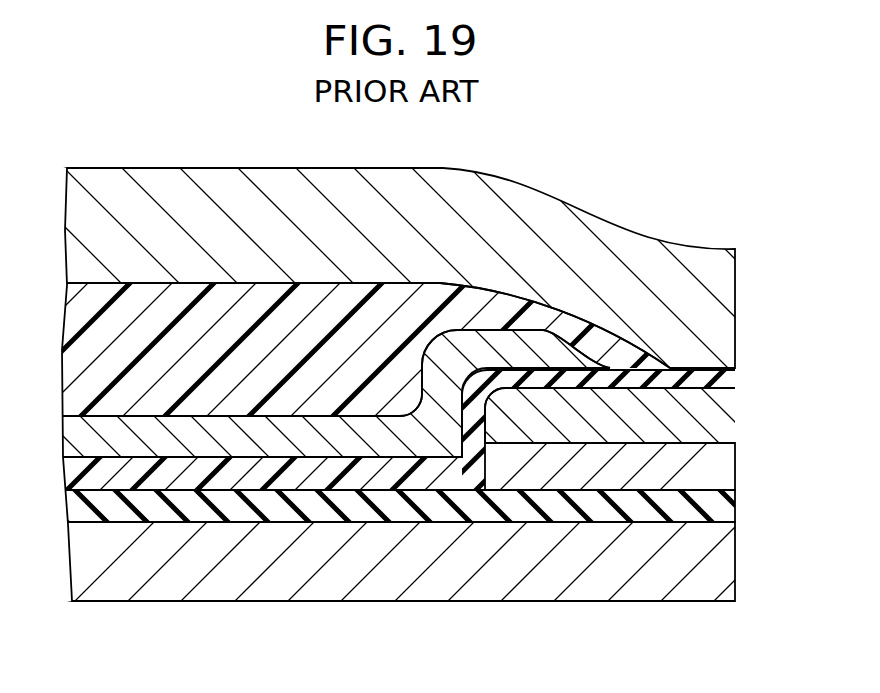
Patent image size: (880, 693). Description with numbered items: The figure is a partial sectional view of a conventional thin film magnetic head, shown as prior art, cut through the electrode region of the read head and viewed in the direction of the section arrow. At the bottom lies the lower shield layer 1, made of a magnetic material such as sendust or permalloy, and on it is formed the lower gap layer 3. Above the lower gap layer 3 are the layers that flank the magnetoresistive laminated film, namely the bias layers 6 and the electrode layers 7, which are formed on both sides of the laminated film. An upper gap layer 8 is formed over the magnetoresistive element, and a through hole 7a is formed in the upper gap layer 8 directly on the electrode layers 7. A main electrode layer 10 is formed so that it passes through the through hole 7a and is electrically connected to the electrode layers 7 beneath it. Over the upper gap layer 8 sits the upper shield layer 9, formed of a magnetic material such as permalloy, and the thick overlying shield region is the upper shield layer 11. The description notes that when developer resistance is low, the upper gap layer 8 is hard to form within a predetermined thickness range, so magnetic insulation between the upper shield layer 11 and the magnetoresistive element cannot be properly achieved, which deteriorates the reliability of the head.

The lower shield layer 1 is at (483, 553).
The lower gap layer 3 is at (340, 498).
The bias layers 6 is at (710, 463).
The electrode layers 7 is at (718, 409).
The through hole 7a is at (578, 395).
The upper gap layer 8 is at (253, 473).
The upper shield layer 9 is at (627, 287).
The main electrode layer 10 is at (148, 440).
The upper shield layer 11 is at (202, 341).